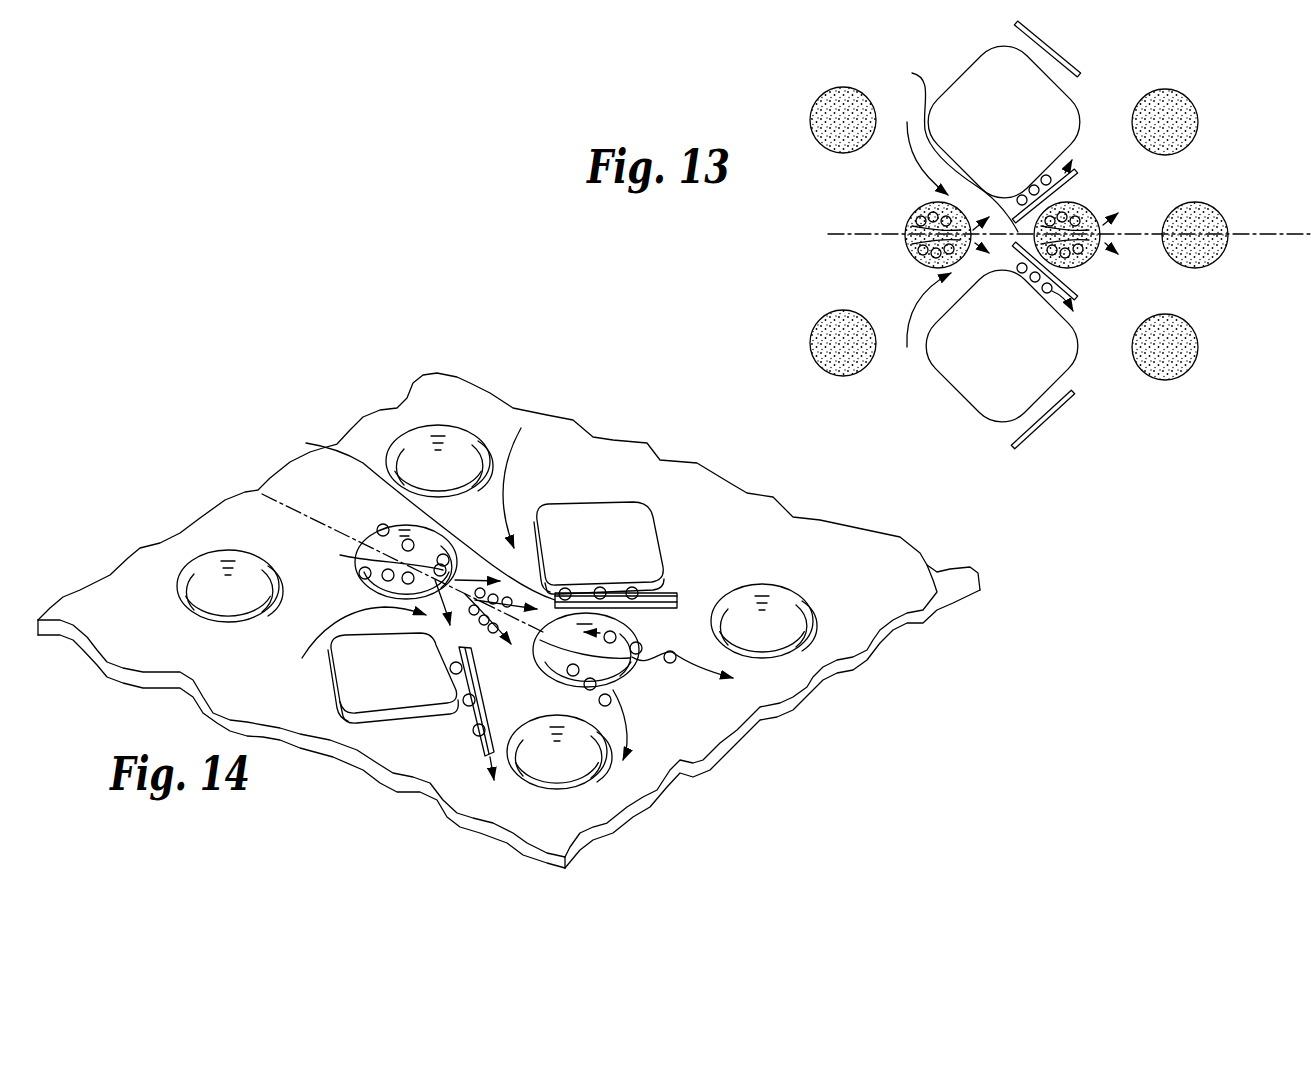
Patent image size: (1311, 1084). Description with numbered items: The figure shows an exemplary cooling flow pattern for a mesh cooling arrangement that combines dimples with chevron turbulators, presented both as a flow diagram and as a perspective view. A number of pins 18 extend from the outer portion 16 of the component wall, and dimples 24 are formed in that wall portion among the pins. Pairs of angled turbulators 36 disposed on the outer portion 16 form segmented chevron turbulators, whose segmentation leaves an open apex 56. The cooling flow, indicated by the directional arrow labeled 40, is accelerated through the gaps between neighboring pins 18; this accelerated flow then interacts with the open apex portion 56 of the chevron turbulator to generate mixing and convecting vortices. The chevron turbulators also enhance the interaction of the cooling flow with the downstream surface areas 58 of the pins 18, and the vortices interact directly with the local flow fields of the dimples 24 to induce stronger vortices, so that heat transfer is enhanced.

In FIG. 14, the outer portion 16 is at (790, 538).
In FIG. 13, the pin 18 is at (1026, 72).
In FIG. 14, the pin 18 is at (587, 557).
In FIG. 13, the dimple 24 is at (1212, 210).
In FIG. 14, the dimple 24 is at (800, 630).
In FIG. 13, the turbulator 36 is at (1079, 172).
In FIG. 14, the turbulator 36 is at (680, 595).
In FIG. 13, the coolant flow direction 40 is at (818, 264).
In FIG. 14, the coolant flow direction 40 is at (243, 488).
In FIG. 13, the open apex 56 is at (950, 204).
In FIG. 14, the open apex 56 is at (497, 594).
In FIG. 13, the downstream surface area 58 is at (1086, 108).